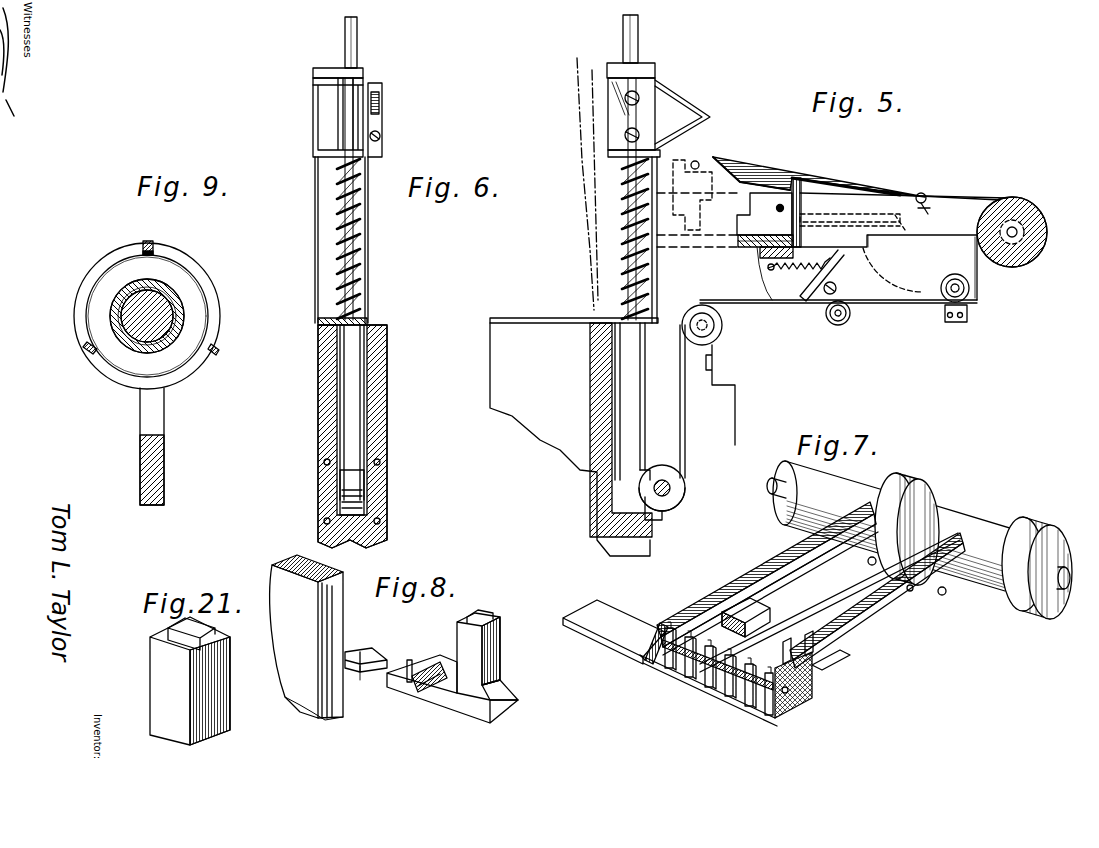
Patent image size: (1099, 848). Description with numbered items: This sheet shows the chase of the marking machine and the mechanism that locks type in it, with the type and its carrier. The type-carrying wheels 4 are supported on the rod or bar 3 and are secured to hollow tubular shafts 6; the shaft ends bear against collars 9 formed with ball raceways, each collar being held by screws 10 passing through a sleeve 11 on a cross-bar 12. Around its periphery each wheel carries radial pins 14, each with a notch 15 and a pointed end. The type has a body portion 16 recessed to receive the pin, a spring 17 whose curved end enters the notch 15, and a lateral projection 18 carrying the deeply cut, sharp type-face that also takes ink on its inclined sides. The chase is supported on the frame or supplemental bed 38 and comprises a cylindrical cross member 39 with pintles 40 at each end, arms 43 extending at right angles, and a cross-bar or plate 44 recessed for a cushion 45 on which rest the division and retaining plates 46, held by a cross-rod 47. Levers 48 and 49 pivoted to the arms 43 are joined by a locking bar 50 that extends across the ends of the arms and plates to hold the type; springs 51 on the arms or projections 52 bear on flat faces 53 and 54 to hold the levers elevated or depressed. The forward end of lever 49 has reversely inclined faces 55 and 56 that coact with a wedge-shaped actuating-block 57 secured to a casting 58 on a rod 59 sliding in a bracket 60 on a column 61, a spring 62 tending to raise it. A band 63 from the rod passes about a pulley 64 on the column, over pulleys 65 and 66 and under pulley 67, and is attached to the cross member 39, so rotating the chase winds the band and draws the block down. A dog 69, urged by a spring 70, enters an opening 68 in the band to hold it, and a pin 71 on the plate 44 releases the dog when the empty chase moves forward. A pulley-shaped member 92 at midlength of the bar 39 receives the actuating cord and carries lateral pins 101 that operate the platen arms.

In FIG. 9, the rod or bar 3 is at (116, 305).
In FIG. 7, the type-carrying wheel 4 is at (1068, 580).
In FIG. 8, the type-carrying wheel 4 is at (306, 637).
In FIG. 9, the tubular shaft 6 is at (126, 290).
In FIG. 5, the tubular shaft 6 is at (600, 320).
In FIG. 9, the collar 9 is at (192, 313).
In FIG. 9, the screw 10 is at (154, 249).
In FIG. 9, the sleeve 11 is at (198, 272).
In FIG. 9, the cross-bar 12 is at (164, 472).
In FIG. 8, the pin or stud 14 is at (376, 657).
In FIG. 8, the notch or recess 15 is at (361, 670).
In FIG. 8, the body portion 16 is at (466, 705).
In FIG. 8, the spring 17 is at (428, 676).
In FIG. 8, the lateral projection 18 is at (470, 645).
In FIG. 21, the lateral projection 18 is at (230, 675).
In FIG. 5, the frame or supplemental bed 38 is at (743, 395).
In FIG. 5, the cross member or bar 39 is at (1040, 250).
In FIG. 7, the cross member or bar 39 is at (968, 516).
In FIG. 5, the pintle 40 is at (1047, 240).
In FIG. 7, the pintle 40 is at (775, 492).
In FIG. 5, the arm 43 is at (964, 200).
In FIG. 7, the arm 43 is at (793, 571).
In FIG. 5, the cross-bar or plate 44 is at (762, 253).
In FIG. 7, the cross-bar or plate 44 is at (762, 620).
In FIG. 5, the cushion or yielding pad 45 is at (740, 238).
In FIG. 7, the cushion or yielding pad 45 is at (728, 697).
In FIG. 5, the division and retaining plate 46 is at (798, 223).
In FIG. 7, the division and retaining plate 46 is at (786, 640).
In FIG. 5, the cross-rod 47 is at (764, 214).
In FIG. 7, the cross-rod 47 is at (795, 648).
In FIG. 7, the lever 48 is at (805, 690).
In FIG. 5, the lever 49 is at (855, 181).
In FIG. 7, the lever 49 is at (725, 578).
In FIG. 5, the cross or locking bar 50 is at (750, 165).
In FIG. 7, the cross or locking bar 50 is at (703, 665).
In FIG. 5, the spring 51 is at (893, 228).
In FIG. 7, the spring 51 is at (862, 630).
In FIG. 5, the projection 52 is at (822, 214).
In FIG. 7, the projection 52 is at (840, 664).
In FIG. 7, the flat face 53 is at (911, 592).
In FIG. 5, the flat face 54 is at (928, 211).
In FIG. 5, the inclined face 55 is at (740, 160).
In FIG. 7, the inclined face 55 is at (642, 630).
In FIG. 5, the inclined face 56 is at (697, 203).
In FIG. 7, the inclined face 56 is at (650, 656).
In FIG. 6, the wedge-shaped abutment or actuating-block 57 is at (383, 146).
In FIG. 5, the wedge-shaped abutment or actuating-block 57 is at (683, 113).
In FIG. 6, the casting 58 is at (326, 130).
In FIG. 6, the rod 59 is at (357, 62).
In FIG. 5, the rod 59 is at (638, 54).
In FIG. 6, the bracket 60 is at (362, 246).
In FIG. 5, the bracket 60 is at (657, 268).
In FIG. 6, the pillar or column 61 is at (387, 356).
In FIG. 5, the pillar or column 61 is at (574, 437).
In FIG. 6, the spring 62 is at (353, 278).
In FIG. 5, the spring 62 is at (646, 242).
In FIG. 6, the band or strap 63 is at (348, 411).
In FIG. 5, the band or strap 63 is at (686, 398).
In FIG. 6, the pulley 64 is at (366, 490).
In FIG. 5, the pulley 64 is at (670, 470).
In FIG. 5, the pulley 65 is at (722, 326).
In FIG. 5, the pulley 66 is at (836, 325).
In FIG. 5, the pulley 67 is at (968, 305).
In FIG. 5, the opening 68 is at (757, 302).
In FIG. 5, the locking dog or lever 69 is at (837, 288).
In FIG. 5, the spring 70 is at (799, 274).
In FIG. 5, the pin 71 is at (889, 268).
In FIG. 7, the pulley or pulley-shaped member 92 is at (920, 486).
In FIG. 7, the pin or stud 101 is at (868, 562).